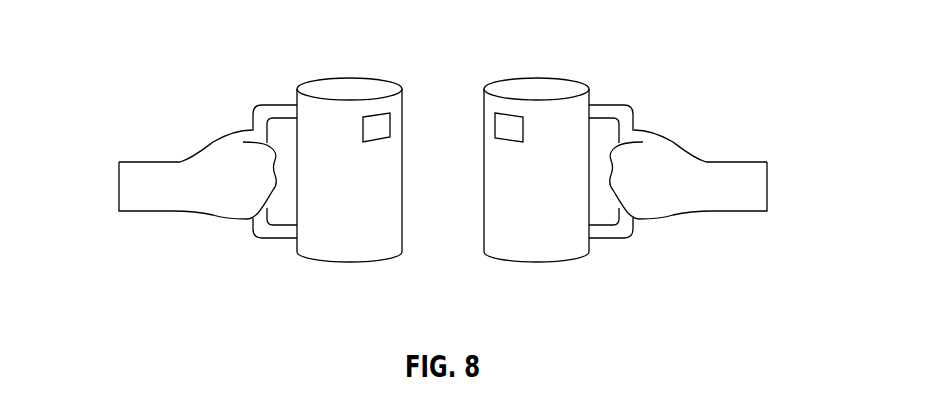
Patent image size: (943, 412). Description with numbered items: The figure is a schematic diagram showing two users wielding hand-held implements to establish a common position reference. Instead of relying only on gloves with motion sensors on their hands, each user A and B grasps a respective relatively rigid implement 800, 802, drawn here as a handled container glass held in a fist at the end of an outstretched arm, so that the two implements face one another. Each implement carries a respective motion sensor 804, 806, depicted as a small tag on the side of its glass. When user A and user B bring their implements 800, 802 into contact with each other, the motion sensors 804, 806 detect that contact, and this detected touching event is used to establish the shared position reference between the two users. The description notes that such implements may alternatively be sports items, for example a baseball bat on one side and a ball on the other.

The rigid implement 800 is at (310, 79).
The rigid implement 802 is at (497, 79).
The motion sensor 804 is at (367, 142).
The motion sensor 806 is at (518, 142).
The user A is at (155, 162).
The user B is at (733, 162).